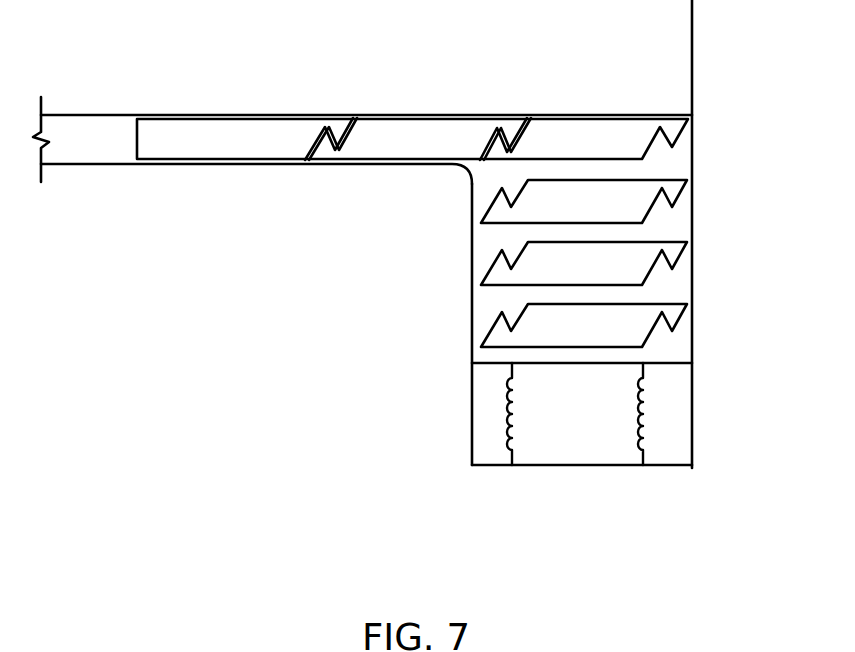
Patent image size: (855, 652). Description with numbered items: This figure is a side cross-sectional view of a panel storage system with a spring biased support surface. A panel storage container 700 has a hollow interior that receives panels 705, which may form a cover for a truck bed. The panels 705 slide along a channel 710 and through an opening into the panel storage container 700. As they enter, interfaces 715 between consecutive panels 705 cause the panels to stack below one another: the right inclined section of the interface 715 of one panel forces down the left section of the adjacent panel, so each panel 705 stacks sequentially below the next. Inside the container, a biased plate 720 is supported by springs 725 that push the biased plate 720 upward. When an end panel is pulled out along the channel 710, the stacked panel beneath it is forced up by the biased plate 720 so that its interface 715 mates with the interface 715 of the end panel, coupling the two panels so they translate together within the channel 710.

The panel storage container 700 is at (472, 410).
The panels 705 is at (382, 116).
The channel 710 is at (90, 128).
The interface 715 is at (533, 116).
The biased plate 720 is at (667, 363).
The springs 725 is at (640, 465).